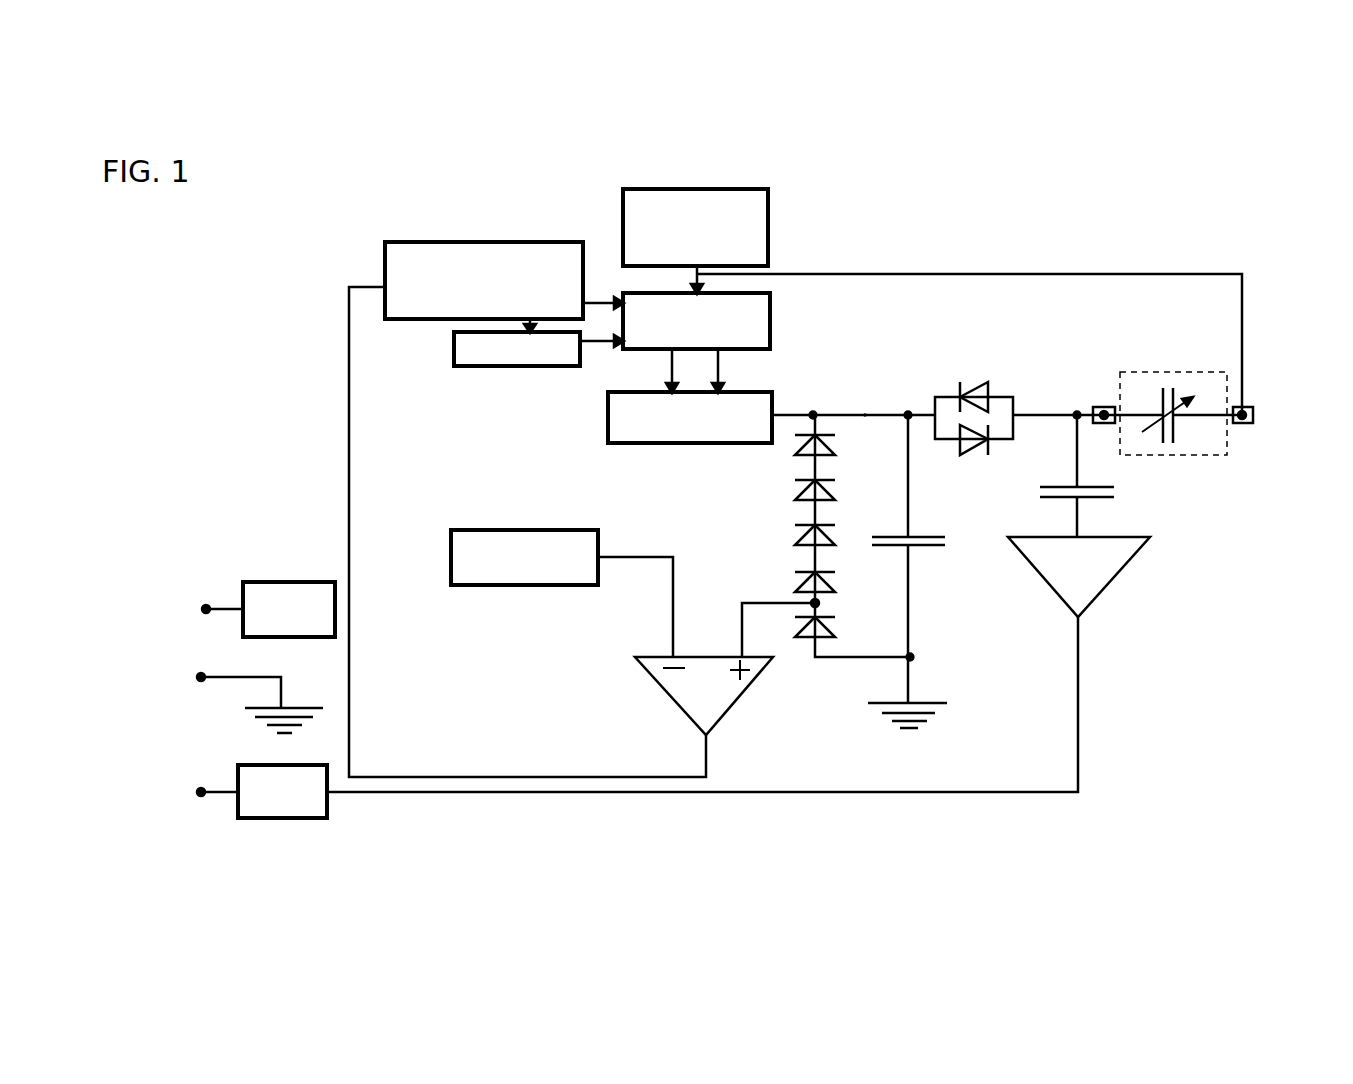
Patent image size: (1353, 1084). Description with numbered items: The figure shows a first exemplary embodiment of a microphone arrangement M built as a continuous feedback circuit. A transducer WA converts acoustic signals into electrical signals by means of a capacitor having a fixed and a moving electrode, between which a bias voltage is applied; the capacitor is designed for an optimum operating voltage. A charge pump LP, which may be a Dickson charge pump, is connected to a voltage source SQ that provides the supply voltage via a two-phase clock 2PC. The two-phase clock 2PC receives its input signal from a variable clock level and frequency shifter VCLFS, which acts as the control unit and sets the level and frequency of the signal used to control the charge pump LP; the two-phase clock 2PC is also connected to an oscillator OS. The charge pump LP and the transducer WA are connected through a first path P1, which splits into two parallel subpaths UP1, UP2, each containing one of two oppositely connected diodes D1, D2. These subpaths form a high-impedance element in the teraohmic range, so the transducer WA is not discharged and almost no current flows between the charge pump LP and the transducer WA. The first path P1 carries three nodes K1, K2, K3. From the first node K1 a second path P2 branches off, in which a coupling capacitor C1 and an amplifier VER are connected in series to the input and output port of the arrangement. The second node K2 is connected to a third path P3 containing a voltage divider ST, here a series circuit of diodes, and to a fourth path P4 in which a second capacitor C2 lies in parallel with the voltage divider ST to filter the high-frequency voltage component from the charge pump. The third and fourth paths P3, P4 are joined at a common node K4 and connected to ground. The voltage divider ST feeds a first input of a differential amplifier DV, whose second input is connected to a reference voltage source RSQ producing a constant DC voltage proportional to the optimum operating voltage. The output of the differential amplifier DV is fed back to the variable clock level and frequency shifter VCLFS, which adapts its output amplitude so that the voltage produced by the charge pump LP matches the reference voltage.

The microphone arrangement M is at (232, 370).
The variable clock level and frequency shifter VCLFS is at (405, 257).
The oscillator OS is at (520, 350).
The two-phase clock 2PC is at (633, 308).
The voltage source SQ is at (663, 202).
The charge pump LP is at (623, 412).
The reference voltage source RSQ is at (458, 545).
The differential amplifier DV is at (688, 680).
The amplifier VER is at (1080, 562).
The first path P1 is at (865, 413).
The second path P2 is at (1083, 687).
The third path P3 is at (797, 430).
The fourth path P4 is at (912, 608).
The first node K1 is at (1080, 417).
The second node K2 is at (813, 415).
The third node K3 is at (908, 415).
The common node K4 is at (913, 658).
The voltage divider ST is at (798, 530).
The first subpath UP1 is at (957, 397).
The second subpath UP2 is at (1015, 447).
The first diode D1 is at (967, 383).
The second diode D2 is at (965, 453).
The transducer WA is at (1195, 447).
The coupling capacitor C1 is at (1083, 495).
The second capacitor C2 is at (932, 547).